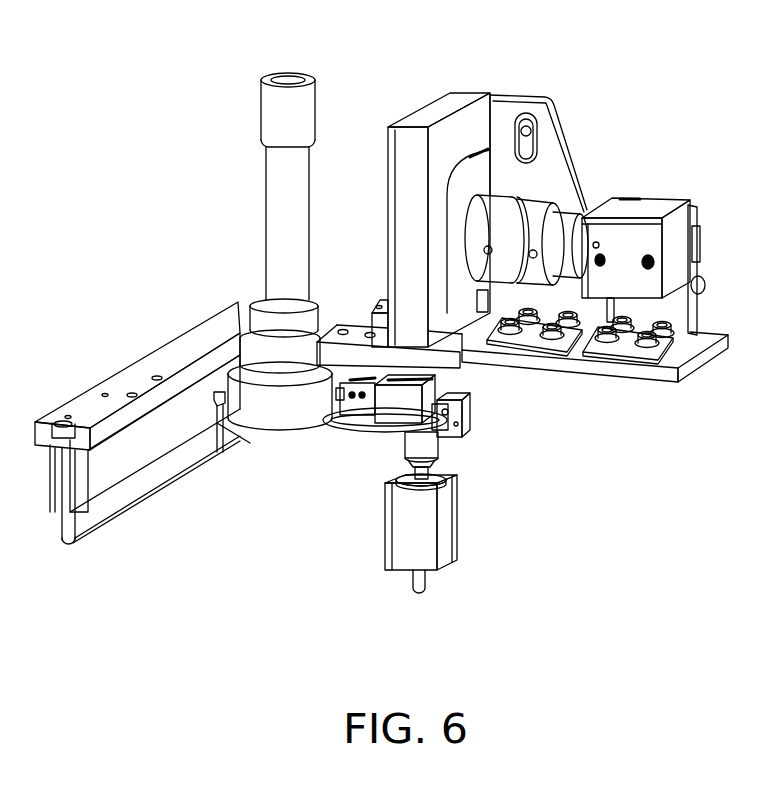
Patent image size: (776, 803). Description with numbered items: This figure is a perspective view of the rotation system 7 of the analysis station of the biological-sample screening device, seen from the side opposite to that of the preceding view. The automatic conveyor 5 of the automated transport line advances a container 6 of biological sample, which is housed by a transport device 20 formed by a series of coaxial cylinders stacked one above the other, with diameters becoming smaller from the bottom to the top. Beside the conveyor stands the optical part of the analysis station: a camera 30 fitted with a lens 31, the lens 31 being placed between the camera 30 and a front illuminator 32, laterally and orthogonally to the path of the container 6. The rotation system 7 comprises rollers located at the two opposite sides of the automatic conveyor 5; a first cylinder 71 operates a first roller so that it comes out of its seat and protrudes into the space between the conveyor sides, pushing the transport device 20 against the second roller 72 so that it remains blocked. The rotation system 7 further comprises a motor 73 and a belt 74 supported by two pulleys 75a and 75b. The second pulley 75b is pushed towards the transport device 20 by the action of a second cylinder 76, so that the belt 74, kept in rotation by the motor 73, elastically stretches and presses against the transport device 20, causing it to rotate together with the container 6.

The automatic conveyor 5 is at (167, 360).
The container 6 is at (283, 232).
The rotation system 7 is at (348, 530).
The transport device 20 is at (273, 415).
The camera 30 is at (620, 253).
The lens 31 is at (498, 228).
The front illuminator 32 is at (450, 145).
The first cylinder 71 is at (460, 413).
The second roller 72 is at (222, 405).
The motor 73 is at (420, 528).
The belt 74 is at (387, 428).
The first pulley 75a is at (433, 417).
The second pulley 75b is at (358, 417).
The second cylinder 76 is at (400, 402).